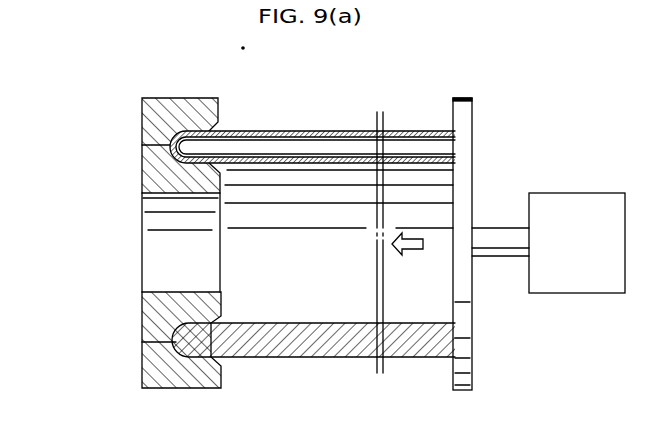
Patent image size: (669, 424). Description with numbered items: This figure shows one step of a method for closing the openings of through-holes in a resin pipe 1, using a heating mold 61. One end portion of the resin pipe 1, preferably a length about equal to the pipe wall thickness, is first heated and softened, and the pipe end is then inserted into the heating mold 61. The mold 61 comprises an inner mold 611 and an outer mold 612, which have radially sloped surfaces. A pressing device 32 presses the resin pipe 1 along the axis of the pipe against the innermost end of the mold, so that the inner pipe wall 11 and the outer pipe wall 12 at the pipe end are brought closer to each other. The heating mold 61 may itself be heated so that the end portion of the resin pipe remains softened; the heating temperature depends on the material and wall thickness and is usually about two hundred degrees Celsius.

The resin pipe 1 is at (312, 106).
The inner pipe wall 11 is at (265, 168).
The outer pipe wall 12 is at (272, 131).
The pressing device 32 is at (578, 192).
The heating mold 61 is at (123, 243).
The inner mold 611 is at (147, 274).
The outer mold 612 is at (142, 121).